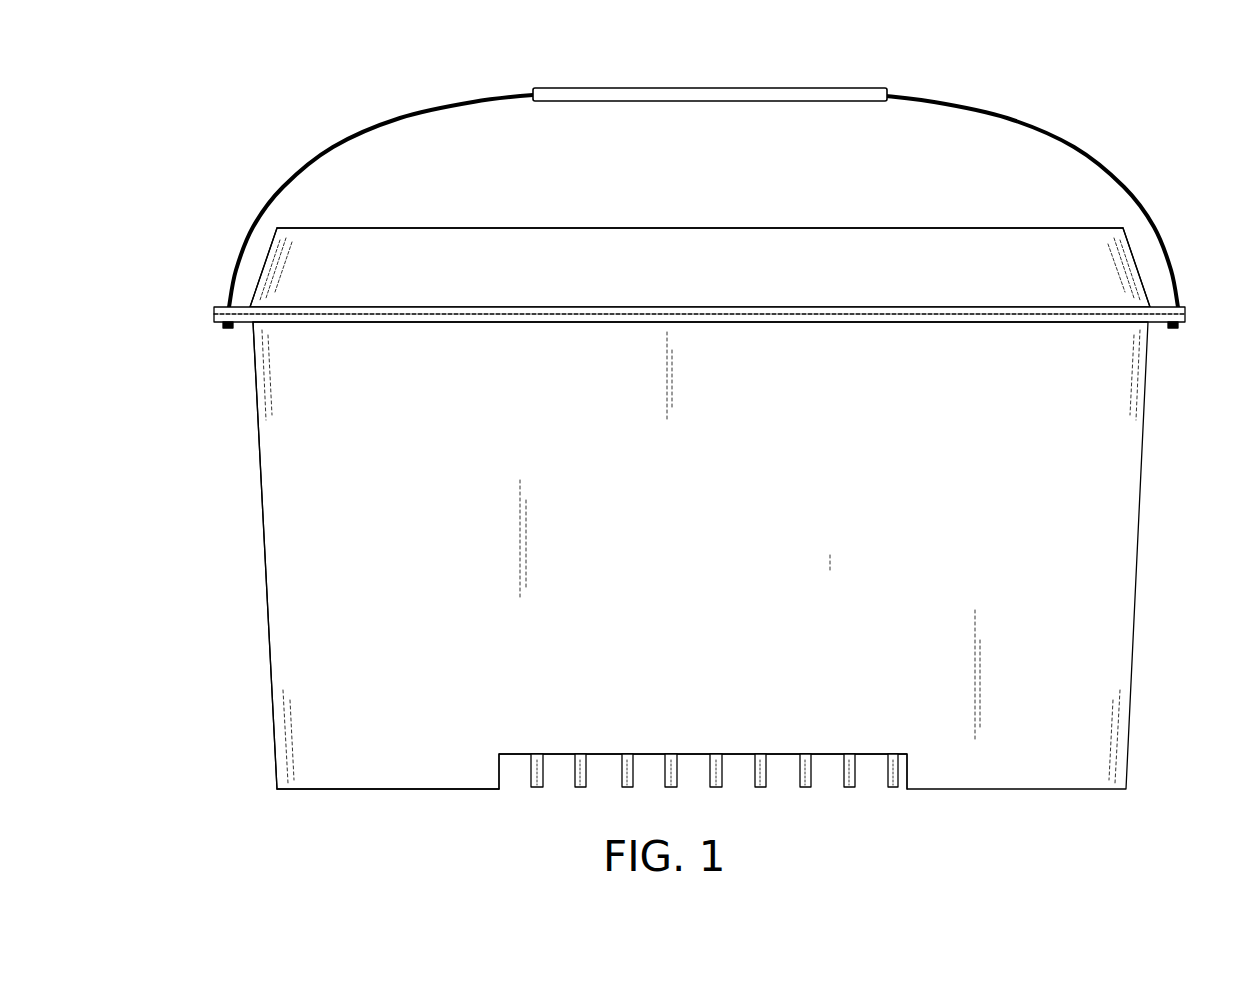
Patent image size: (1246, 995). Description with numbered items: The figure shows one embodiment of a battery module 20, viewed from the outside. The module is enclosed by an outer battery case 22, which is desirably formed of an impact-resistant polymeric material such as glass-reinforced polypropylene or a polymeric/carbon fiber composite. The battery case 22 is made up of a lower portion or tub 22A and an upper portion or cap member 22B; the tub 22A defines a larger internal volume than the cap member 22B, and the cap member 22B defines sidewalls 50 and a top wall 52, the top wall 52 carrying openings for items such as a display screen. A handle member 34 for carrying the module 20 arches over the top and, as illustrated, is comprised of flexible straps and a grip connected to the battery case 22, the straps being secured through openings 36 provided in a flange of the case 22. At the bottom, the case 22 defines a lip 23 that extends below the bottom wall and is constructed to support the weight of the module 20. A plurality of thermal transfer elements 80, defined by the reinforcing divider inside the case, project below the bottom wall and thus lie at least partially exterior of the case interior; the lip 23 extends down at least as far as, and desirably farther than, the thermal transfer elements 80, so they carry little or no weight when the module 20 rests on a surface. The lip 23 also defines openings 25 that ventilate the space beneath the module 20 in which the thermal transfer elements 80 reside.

The battery module 20 is at (316, 52).
The battery case 22 is at (260, 500).
The tub 22A is at (1148, 360).
The cap member 22B is at (1108, 227).
The lip 23 is at (413, 790).
The openings 25 is at (777, 774).
The handle member 34 is at (923, 95).
The openings 36 is at (231, 290).
The sidewalls 50 is at (270, 240).
The top wall 52 is at (500, 229).
The thermal transfer elements 80 is at (576, 790).